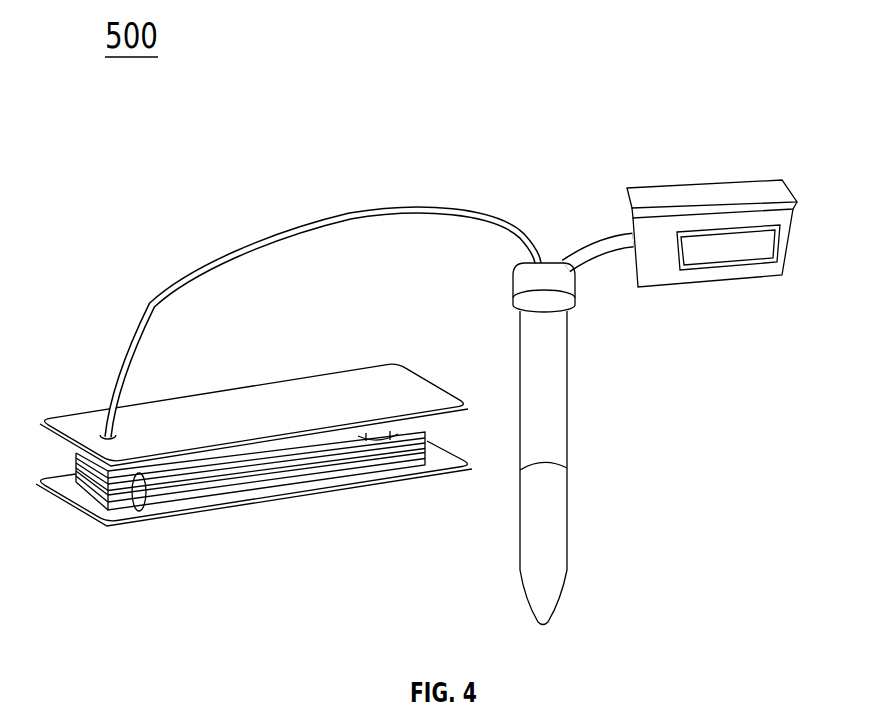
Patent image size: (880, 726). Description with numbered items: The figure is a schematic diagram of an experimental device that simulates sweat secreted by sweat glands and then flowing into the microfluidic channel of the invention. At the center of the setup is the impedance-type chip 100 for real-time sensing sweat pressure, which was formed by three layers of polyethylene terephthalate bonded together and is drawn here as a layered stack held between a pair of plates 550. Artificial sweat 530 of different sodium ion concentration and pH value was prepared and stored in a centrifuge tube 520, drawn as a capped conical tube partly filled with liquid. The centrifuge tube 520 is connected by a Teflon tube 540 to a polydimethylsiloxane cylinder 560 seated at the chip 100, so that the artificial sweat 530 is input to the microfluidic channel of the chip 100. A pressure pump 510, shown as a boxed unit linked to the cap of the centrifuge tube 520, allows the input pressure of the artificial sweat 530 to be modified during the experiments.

The pressure pump 510 is at (753, 195).
The centrifuge tube 520 is at (568, 390).
The artificial sweat 530 is at (563, 531).
The Teflon tube 540 is at (333, 212).
The clamping plates 550 is at (292, 390).
The polydimethylsiloxane (PDMS) cylinder 560 is at (137, 510).
The impedance-type chip 100 is at (283, 465).